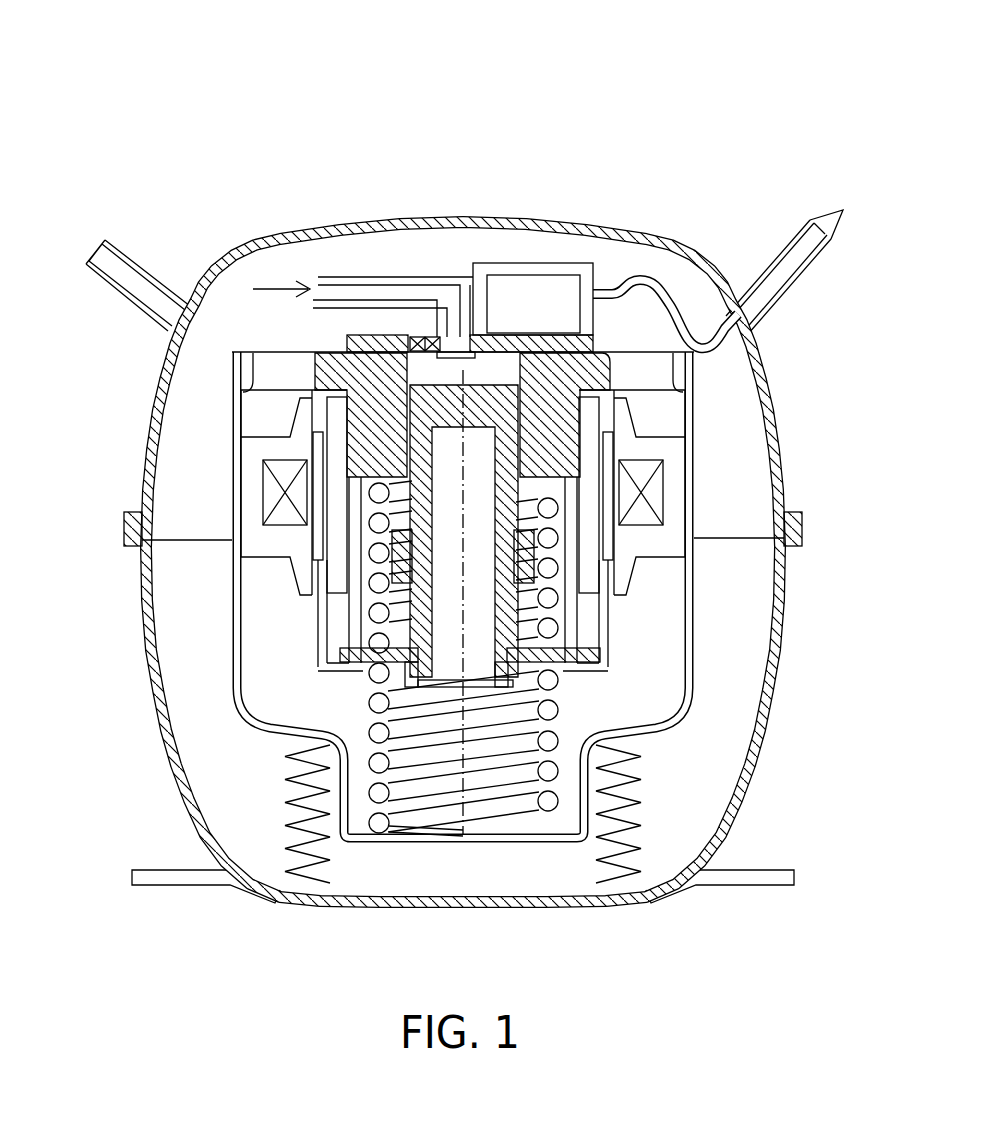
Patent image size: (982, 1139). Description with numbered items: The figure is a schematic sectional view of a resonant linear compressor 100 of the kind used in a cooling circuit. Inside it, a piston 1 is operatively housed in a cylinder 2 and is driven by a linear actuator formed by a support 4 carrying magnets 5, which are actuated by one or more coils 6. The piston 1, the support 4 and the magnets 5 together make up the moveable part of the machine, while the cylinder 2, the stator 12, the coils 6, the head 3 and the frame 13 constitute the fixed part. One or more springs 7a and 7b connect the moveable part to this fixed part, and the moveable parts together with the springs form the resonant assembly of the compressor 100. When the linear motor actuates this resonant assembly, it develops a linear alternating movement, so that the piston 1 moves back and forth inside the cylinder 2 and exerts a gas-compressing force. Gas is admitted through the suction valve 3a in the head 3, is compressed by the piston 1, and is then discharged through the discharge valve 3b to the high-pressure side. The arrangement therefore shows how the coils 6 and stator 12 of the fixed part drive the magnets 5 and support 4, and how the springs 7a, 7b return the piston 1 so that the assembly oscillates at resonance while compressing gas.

The resonant linear compressor 100 is at (349, 72).
The piston 1 is at (475, 405).
The cylinder 2 is at (548, 381).
The head 3 is at (515, 258).
The suction valve 3a is at (448, 352).
The discharge valve 3b is at (513, 320).
The support 4 is at (308, 640).
The magnets 5 is at (318, 509).
The coils 6 is at (283, 492).
The spring 7a is at (563, 602).
The spring 7b is at (561, 717).
The stator 12 is at (672, 527).
The frame 13 is at (692, 588).